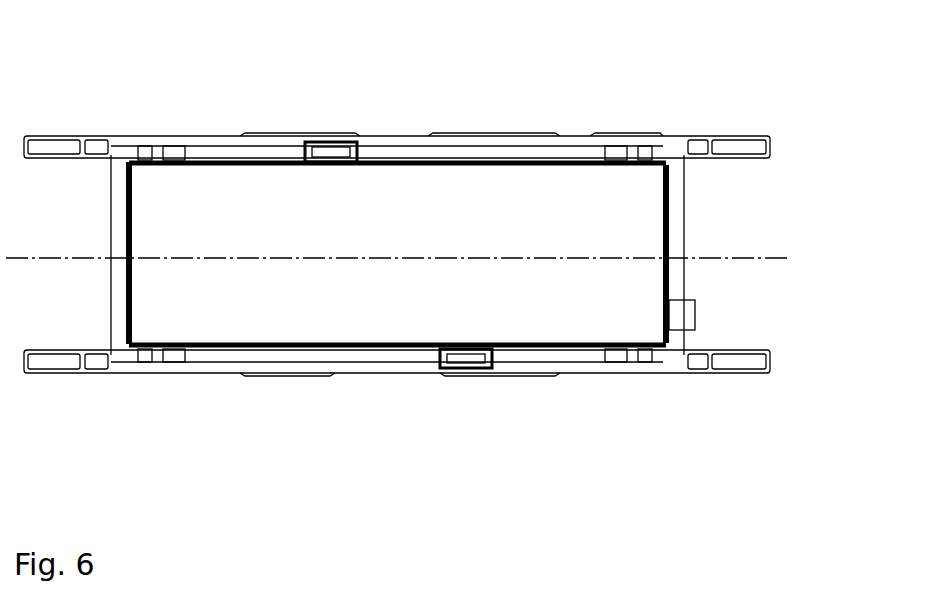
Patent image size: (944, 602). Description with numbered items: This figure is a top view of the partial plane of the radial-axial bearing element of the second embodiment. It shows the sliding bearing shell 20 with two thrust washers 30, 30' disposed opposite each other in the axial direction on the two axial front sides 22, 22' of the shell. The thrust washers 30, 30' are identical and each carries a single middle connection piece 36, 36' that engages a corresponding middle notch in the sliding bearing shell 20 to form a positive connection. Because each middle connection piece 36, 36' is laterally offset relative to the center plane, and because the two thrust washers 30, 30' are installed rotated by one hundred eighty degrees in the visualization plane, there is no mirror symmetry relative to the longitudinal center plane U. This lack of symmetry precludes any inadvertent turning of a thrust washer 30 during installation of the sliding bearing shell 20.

The sliding bearing shell 20 is at (578, 310).
The axial front side 22 is at (397, 425).
The axial front side 22' is at (397, 88).
The thrust washer 30 is at (391, 426).
The thrust washer 30' is at (397, 86).
The middle connection piece 36 is at (475, 426).
The middle connection piece 36' is at (326, 88).
The center plane U is at (485, 262).